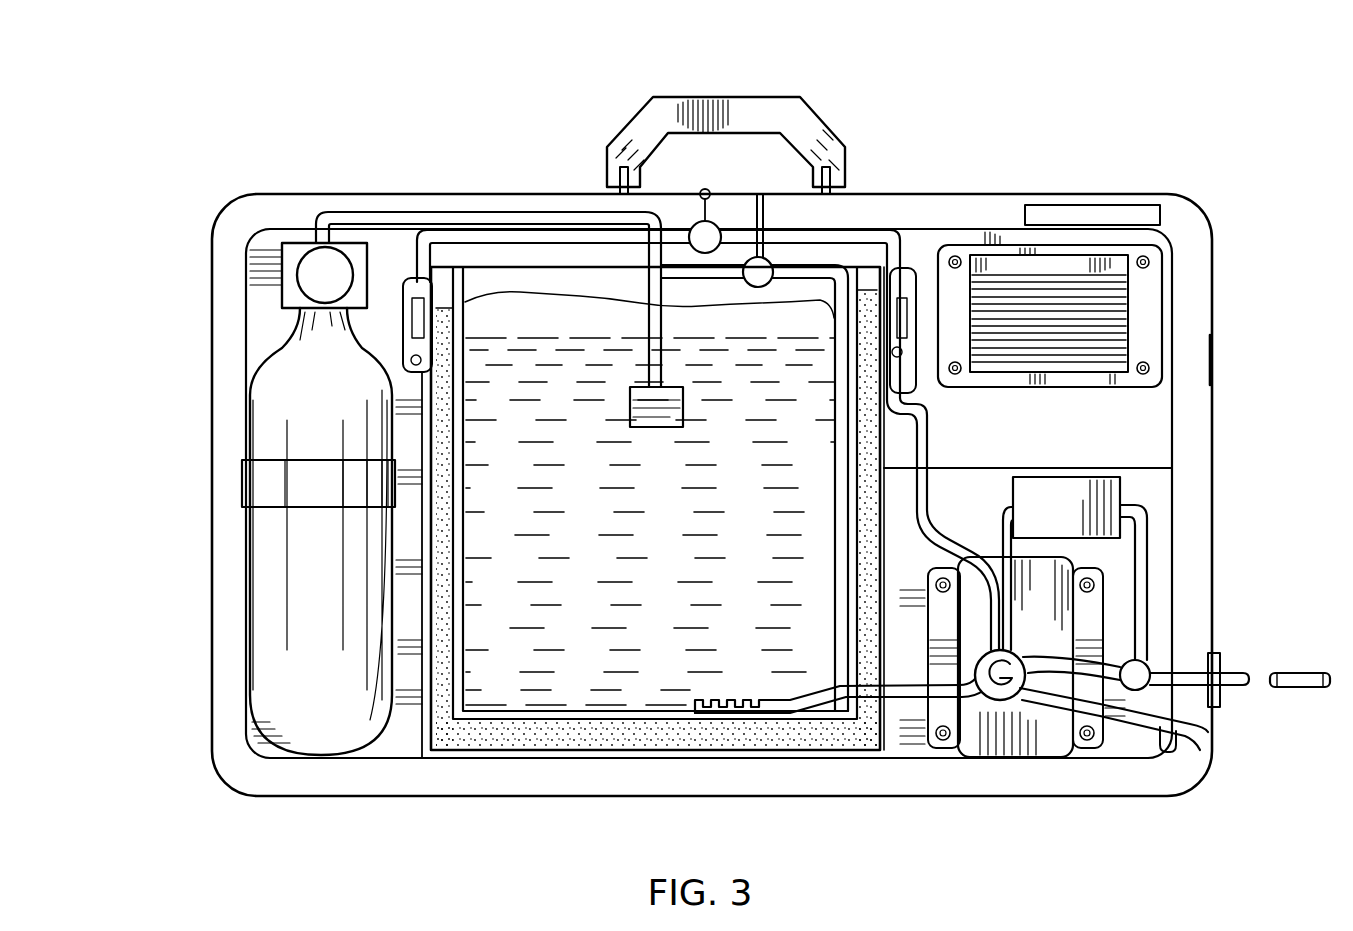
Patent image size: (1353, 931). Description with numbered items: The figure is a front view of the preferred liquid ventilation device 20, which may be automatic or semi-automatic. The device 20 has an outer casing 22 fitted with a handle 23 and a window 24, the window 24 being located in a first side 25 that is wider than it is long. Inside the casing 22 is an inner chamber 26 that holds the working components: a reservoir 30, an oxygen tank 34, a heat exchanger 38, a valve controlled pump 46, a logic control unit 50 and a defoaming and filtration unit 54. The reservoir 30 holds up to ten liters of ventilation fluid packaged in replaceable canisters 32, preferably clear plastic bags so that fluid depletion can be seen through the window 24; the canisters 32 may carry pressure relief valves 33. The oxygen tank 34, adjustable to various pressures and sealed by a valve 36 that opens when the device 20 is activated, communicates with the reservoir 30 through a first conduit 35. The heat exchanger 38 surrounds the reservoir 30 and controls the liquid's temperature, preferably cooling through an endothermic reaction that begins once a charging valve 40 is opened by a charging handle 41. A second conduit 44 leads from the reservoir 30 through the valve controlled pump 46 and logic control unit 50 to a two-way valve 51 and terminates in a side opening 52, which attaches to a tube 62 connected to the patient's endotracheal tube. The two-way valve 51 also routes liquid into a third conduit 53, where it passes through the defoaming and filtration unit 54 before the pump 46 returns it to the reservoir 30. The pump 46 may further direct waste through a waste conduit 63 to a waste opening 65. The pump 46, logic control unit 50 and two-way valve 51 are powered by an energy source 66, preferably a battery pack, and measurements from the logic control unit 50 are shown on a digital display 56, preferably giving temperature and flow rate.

The device 20 is at (525, 165).
The outer casing 22 is at (1213, 292).
The handle 23 is at (763, 97).
The window 24 is at (1160, 418).
The first side 25 is at (1200, 360).
The inner chamber 26 is at (927, 262).
The reservoir 30 is at (478, 705).
The replaceable canisters 32 is at (538, 672).
The pressure relief valves 33 is at (773, 263).
The oxygen tank 34 is at (268, 717).
The first conduit 35 is at (407, 212).
The valve 36 is at (315, 243).
The heat exchanger 38 is at (585, 733).
The charging valve 40 is at (712, 222).
The charging handle 41 is at (705, 189).
The second conduit 44 is at (823, 703).
The valve controlled pump 46 is at (1003, 707).
The logic control unit 50 is at (1027, 703).
The two-way valve 51 is at (1160, 652).
The side opening 52 is at (1220, 657).
The third conduit 53 is at (976, 495).
The defoaming and filtration unit 54 is at (1040, 497).
The digital display 56 is at (1165, 210).
The tube 62 is at (1293, 688).
The waste conduit 63 is at (1207, 737).
The waste opening 65 is at (1210, 725).
The energy source 66 is at (1027, 740).